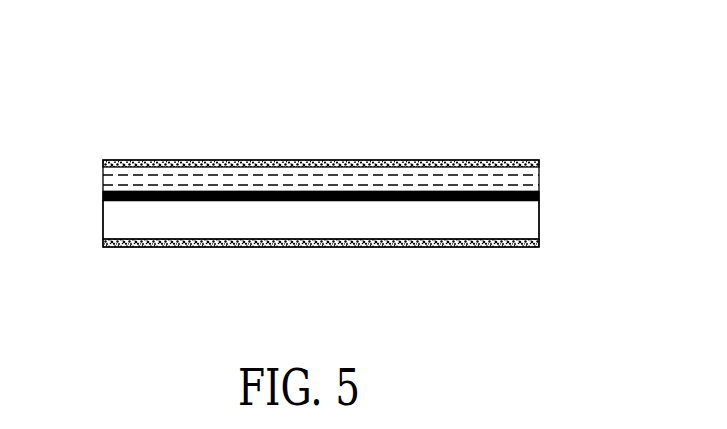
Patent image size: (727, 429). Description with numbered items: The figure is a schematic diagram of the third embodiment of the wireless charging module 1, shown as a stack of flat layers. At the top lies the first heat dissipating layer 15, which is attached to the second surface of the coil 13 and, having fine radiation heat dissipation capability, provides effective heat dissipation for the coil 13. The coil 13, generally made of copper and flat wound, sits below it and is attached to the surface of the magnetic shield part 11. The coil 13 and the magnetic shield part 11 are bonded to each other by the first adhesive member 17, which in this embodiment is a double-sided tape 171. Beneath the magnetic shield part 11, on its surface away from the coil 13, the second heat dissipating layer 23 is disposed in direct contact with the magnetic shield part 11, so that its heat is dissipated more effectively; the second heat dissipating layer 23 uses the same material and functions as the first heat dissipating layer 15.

The wireless charging module 1 is at (638, 58).
The magnetic shield part 11 is at (528, 224).
The coil 13 is at (528, 182).
The first heat dissipating layer 15 is at (103, 162).
The first adhesive member 17 is at (103, 195).
The double-sided tape 171 is at (539, 196).
The second heat dissipating layer 23 is at (103, 241).